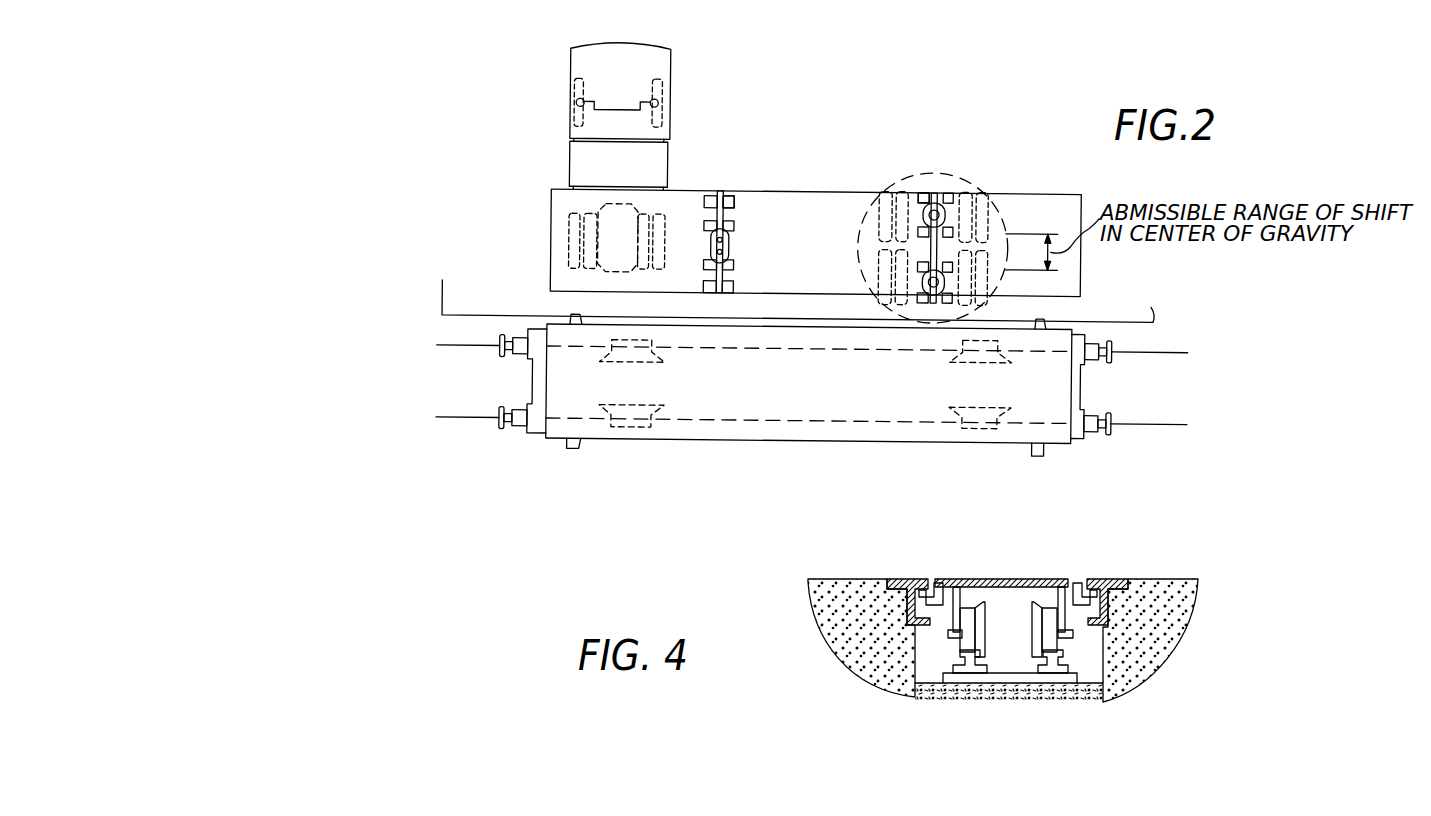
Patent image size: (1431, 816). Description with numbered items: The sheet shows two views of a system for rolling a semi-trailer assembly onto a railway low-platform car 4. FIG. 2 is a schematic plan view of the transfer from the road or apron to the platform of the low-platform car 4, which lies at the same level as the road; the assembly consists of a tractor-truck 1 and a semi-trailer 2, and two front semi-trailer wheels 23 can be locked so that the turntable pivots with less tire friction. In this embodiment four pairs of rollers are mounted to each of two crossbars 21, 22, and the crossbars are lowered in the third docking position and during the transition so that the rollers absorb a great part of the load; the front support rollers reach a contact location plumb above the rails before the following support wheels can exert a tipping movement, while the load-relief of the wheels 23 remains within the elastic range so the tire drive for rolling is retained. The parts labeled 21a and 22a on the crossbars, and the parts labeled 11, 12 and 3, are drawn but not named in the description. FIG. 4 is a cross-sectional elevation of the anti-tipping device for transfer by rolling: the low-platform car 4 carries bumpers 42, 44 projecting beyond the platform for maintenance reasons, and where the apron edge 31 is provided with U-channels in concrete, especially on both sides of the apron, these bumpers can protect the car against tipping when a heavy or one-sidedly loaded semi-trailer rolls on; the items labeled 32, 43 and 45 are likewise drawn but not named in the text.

In FIG. 2, the tractor-truck 1 is at (572, 62).
In FIG. 2, the motor housing 11 is at (572, 122).
In FIG. 2, the reduction gear 12 is at (570, 262).
In FIG. 2, the semi-trailer 2 is at (1067, 200).
In FIG. 2, the crossbar 21 is at (718, 200).
In FIG. 2, the coupling claw 21a is at (733, 200).
In FIG. 2, the crossbar 22 is at (934, 190).
In FIG. 2, the coupling claw 22a is at (918, 190).
In FIG. 2, the semi-trailer wheels 23 is at (884, 210).
In FIG. 2, the ground/rail bed 3 is at (460, 300).
In FIG. 4, the ground/rail bed 3 is at (833, 603).
In FIG. 4, the apron edge 31 is at (911, 583).
In FIG. 4, the right guide channel 32 is at (1106, 590).
In FIG. 2, the low-platform car 4 is at (560, 378).
In FIG. 4, the low-platform car 4 is at (1023, 580).
In FIG. 2, the bumper 42 is at (582, 316).
In FIG. 4, the bumper 42 is at (943, 597).
In FIG. 2, the engaging projection 43 is at (1043, 318).
In FIG. 2, the bumper 44 is at (580, 447).
In FIG. 4, the bumper 44 is at (1083, 597).
In FIG. 2, the engaging projection 45 is at (1043, 450).